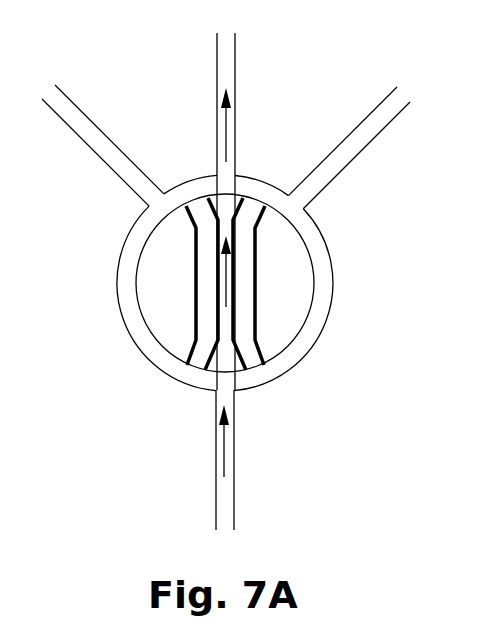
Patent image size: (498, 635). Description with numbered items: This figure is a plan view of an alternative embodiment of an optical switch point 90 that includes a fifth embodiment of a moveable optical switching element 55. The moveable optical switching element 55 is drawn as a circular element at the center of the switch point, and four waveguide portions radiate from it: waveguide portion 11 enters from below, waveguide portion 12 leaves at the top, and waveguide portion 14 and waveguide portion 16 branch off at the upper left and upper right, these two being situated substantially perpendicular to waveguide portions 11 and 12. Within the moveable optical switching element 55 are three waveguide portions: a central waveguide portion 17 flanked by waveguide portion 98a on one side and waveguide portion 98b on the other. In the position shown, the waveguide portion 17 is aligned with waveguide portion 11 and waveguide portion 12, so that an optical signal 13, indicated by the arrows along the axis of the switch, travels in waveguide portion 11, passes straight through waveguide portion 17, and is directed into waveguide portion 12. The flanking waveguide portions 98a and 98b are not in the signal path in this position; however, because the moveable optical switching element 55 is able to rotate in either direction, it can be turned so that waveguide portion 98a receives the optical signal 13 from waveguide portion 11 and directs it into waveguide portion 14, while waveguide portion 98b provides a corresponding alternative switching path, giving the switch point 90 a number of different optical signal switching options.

The optical switch point 90 is at (145, 61).
The moveable optical switching element 55 is at (148, 235).
The waveguide portion 12 is at (236, 55).
The waveguide portion 11 is at (234, 467).
The optical signal 13 is at (222, 442).
The waveguide portion 17 is at (236, 368).
The waveguide portion 14 is at (112, 140).
The waveguide portion 16 is at (345, 165).
The waveguide portion 98a is at (196, 341).
The waveguide portion 98b is at (256, 340).